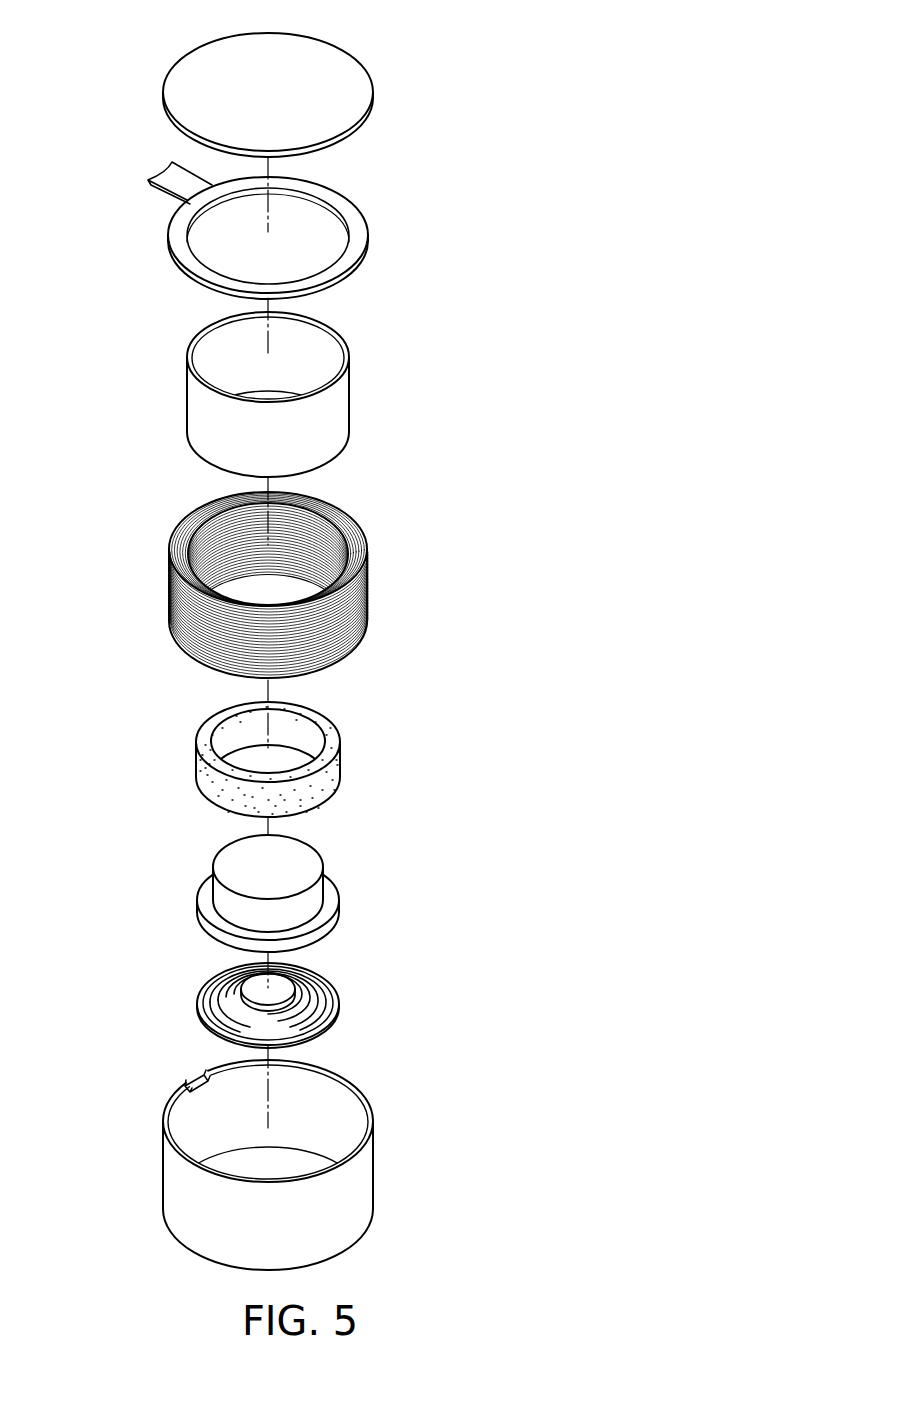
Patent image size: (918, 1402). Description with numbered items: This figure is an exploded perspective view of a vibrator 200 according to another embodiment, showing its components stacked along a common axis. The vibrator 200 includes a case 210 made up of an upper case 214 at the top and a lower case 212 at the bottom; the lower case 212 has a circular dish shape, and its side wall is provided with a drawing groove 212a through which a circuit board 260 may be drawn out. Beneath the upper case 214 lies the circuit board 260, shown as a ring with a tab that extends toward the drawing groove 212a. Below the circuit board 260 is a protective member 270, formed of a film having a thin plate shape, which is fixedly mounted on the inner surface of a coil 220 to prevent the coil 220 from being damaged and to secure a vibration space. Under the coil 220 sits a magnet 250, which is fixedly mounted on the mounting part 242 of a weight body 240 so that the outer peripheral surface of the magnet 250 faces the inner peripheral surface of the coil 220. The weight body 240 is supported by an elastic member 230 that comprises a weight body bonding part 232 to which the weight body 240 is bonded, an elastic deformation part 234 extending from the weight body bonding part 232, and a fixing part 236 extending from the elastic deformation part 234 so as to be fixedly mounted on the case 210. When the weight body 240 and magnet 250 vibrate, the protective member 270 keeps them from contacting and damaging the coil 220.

The vibrator 200 is at (77, 29).
The case 210 is at (342, 651).
The upper case 214 is at (352, 92).
The lower case 212 is at (362, 1170).
The drawing groove 212a is at (190, 1084).
The circuit board 260 is at (350, 223).
The protective member 270 is at (338, 403).
The coil 220 is at (358, 590).
The magnet 250 is at (335, 732).
The weight body 240 is at (302, 855).
The mounting part 242 is at (328, 900).
The elastic member 230 is at (478, 952).
The weight body bonding part 232 is at (310, 963).
The elastic deformation part 234 is at (333, 1000).
The fixing part 236 is at (333, 1008).